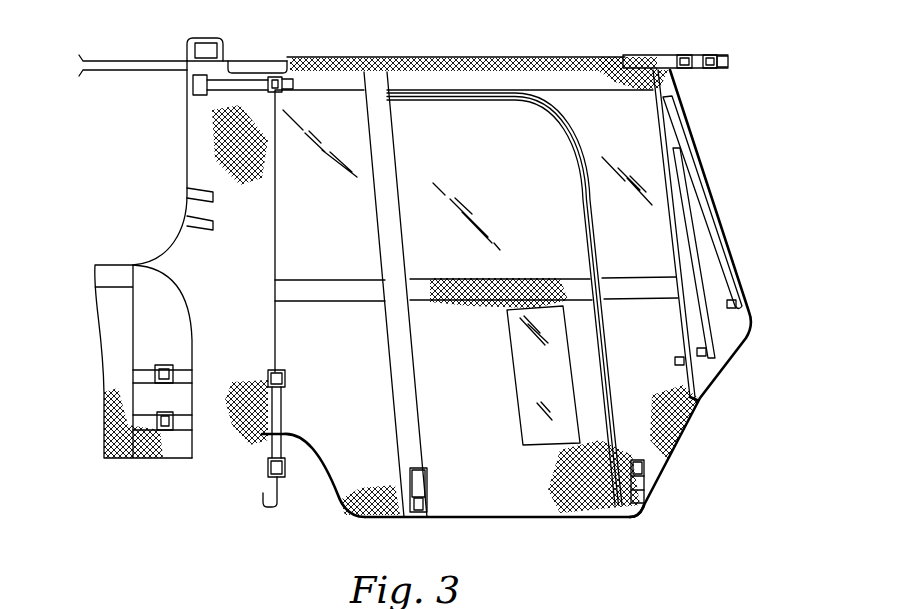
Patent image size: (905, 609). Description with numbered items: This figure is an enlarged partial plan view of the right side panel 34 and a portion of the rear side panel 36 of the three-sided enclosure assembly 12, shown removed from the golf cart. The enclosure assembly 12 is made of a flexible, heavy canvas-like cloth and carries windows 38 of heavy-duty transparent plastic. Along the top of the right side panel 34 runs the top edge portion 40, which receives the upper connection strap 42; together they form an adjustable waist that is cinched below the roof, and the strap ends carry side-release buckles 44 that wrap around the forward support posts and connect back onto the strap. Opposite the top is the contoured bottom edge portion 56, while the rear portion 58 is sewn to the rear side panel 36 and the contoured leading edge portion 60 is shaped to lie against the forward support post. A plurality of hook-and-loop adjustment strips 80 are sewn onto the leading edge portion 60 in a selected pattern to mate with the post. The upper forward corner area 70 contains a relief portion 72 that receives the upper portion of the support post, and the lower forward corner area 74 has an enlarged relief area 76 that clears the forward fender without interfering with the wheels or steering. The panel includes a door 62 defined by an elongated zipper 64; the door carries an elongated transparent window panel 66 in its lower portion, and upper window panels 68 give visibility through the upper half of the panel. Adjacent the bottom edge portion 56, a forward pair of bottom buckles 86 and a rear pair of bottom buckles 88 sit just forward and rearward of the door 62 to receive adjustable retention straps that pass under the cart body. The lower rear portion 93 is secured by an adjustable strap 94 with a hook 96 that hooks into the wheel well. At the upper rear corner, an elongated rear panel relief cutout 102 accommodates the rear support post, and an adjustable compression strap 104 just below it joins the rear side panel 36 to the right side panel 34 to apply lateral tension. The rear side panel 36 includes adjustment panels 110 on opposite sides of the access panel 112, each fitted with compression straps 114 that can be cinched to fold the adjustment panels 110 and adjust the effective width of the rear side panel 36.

The enclosure assembly 12 is at (760, 157).
The right side panel 34 is at (456, 380).
The rear side panel 36 is at (125, 355).
The windows 38 is at (517, 123).
The top edge portion 40 is at (457, 88).
The upper connection strap 42 is at (246, 62).
The buckles 44 is at (718, 55).
The bottom edge portion 56 is at (537, 497).
The rear portion 58 is at (293, 357).
The leading edge portion 60 is at (713, 272).
The door 62 is at (628, 462).
The zipper 64 is at (632, 480).
The transparent window panel 66 is at (600, 441).
The upper window panels 68 is at (563, 190).
The upper forward corner area 70 is at (643, 102).
The relief portion 72 is at (643, 60).
The lower forward corner area 74 is at (673, 385).
The enlarged relief area 76 is at (683, 423).
The adjustment strips 80 is at (712, 223).
The bottom buckles 86 is at (647, 518).
The bottom buckles 88 is at (417, 515).
The lower rear portion 93 is at (248, 416).
The adjustable strap 94 is at (276, 448).
The hook 96 is at (265, 510).
The rear panel relief cutout 102 is at (258, 72).
The adjustable compression strap 104 is at (227, 87).
The adjustment panels 110 is at (160, 307).
The access panel 112 is at (100, 402).
The compression straps 114 is at (147, 425).